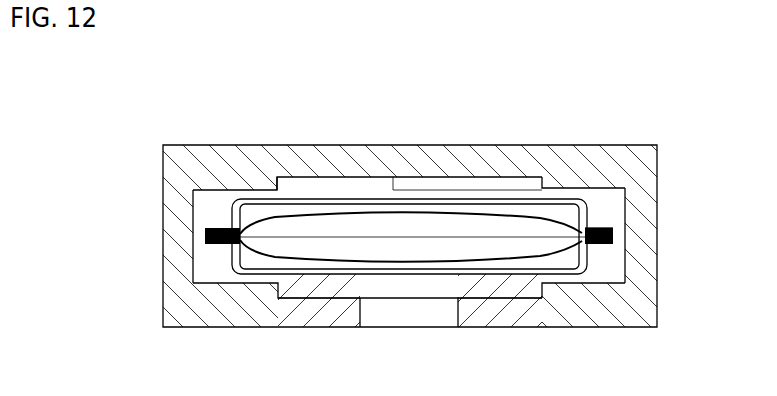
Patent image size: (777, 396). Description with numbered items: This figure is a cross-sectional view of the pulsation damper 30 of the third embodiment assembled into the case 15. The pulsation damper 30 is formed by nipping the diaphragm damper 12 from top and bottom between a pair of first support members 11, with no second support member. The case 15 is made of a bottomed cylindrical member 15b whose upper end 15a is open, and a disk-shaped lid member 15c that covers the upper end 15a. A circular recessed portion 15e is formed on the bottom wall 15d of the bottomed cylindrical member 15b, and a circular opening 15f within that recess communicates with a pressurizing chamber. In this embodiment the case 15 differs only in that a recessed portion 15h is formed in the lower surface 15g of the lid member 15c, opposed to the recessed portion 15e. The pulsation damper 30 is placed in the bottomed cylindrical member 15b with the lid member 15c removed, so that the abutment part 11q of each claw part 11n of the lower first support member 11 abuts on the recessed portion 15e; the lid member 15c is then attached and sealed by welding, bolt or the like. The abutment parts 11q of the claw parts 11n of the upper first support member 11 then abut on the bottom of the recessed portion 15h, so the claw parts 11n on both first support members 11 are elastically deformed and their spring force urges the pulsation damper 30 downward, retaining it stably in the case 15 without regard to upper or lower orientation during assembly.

The case 15 is at (661, 144).
The upper end 15a is at (191, 196).
The bottomed cylindrical member 15b is at (637, 252).
The lid member 15c is at (276, 154).
The bottom wall 15d is at (592, 310).
The recessed portion 15e is at (530, 298).
The opening 15f is at (358, 302).
The lower surface 15g is at (522, 177).
The recessed portion 15h is at (343, 177).
The first support member 11 is at (232, 229).
The claw part 11n is at (421, 178).
The abutment part 11q is at (418, 190).
The diaphragm damper 12 is at (546, 203).
The fixing ring FR is at (597, 200).
The pulsation damper 30 is at (609, 221).